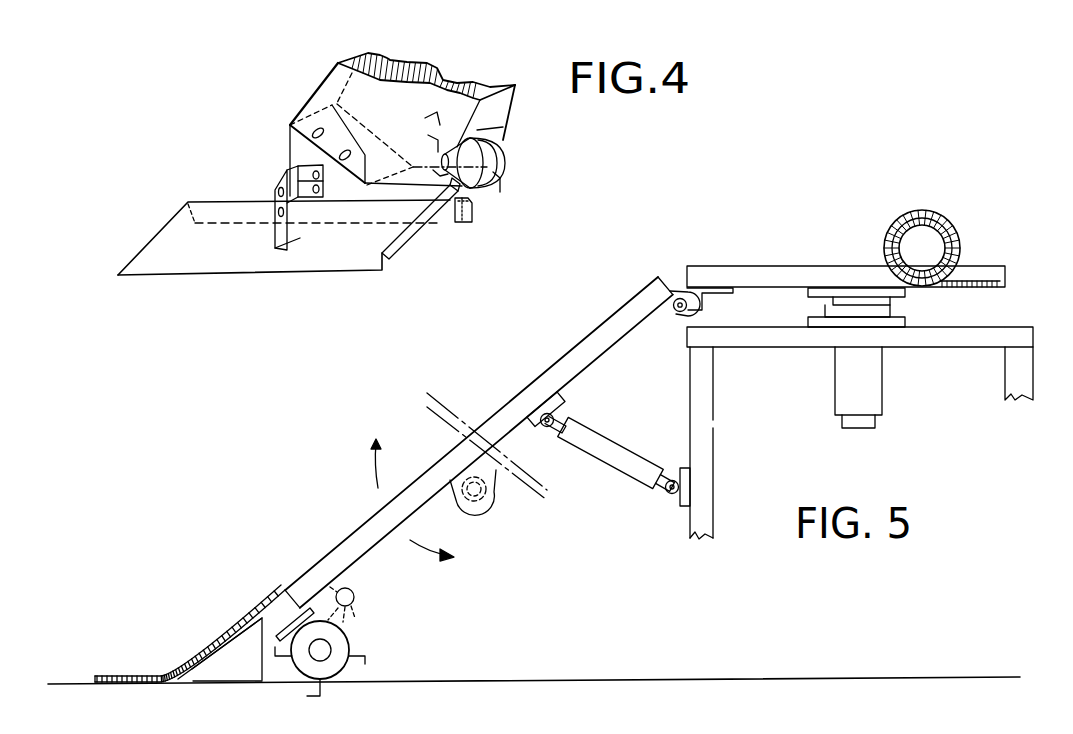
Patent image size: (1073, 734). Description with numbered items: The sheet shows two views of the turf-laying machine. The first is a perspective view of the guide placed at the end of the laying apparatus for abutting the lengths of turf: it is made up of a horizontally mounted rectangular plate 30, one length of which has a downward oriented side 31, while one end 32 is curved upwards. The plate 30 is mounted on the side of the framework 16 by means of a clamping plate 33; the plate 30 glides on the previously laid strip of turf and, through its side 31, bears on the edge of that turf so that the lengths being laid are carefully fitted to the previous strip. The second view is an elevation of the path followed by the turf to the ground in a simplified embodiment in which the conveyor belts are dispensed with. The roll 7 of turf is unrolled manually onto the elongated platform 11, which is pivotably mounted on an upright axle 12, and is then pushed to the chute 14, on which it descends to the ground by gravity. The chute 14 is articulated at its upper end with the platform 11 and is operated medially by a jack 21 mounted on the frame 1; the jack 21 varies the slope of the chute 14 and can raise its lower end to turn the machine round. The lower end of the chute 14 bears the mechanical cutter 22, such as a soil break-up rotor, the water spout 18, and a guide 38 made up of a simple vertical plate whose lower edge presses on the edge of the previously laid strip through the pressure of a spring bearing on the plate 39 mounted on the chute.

In FIG. 5, the longitudinal frame 1 is at (705, 472).
In FIG. 5, the roll of turf 7 is at (121, 672).
In FIG. 5, the elongated platform 11 is at (781, 287).
In FIG. 5, the upright axle 12 is at (885, 298).
In FIG. 5, the chute 14 is at (527, 400).
In FIG. 4, the framework 16 is at (332, 90).
In FIG. 5, the water spout 18 is at (356, 594).
In FIG. 5, the jack 21 is at (617, 458).
In FIG. 4, the mechanical cutter 22 is at (500, 185).
In FIG. 5, the mechanical cutter 22 is at (350, 640).
In FIG. 4, the rectangular plate 30 is at (236, 252).
In FIG. 4, the downward oriented side 31 is at (445, 213).
In FIG. 4, the curved end 32 is at (403, 246).
In FIG. 4, the clamping plate 33 is at (280, 185).
In FIG. 5, the guide 38 is at (233, 647).
In FIG. 5, the plate 39 is at (480, 514).